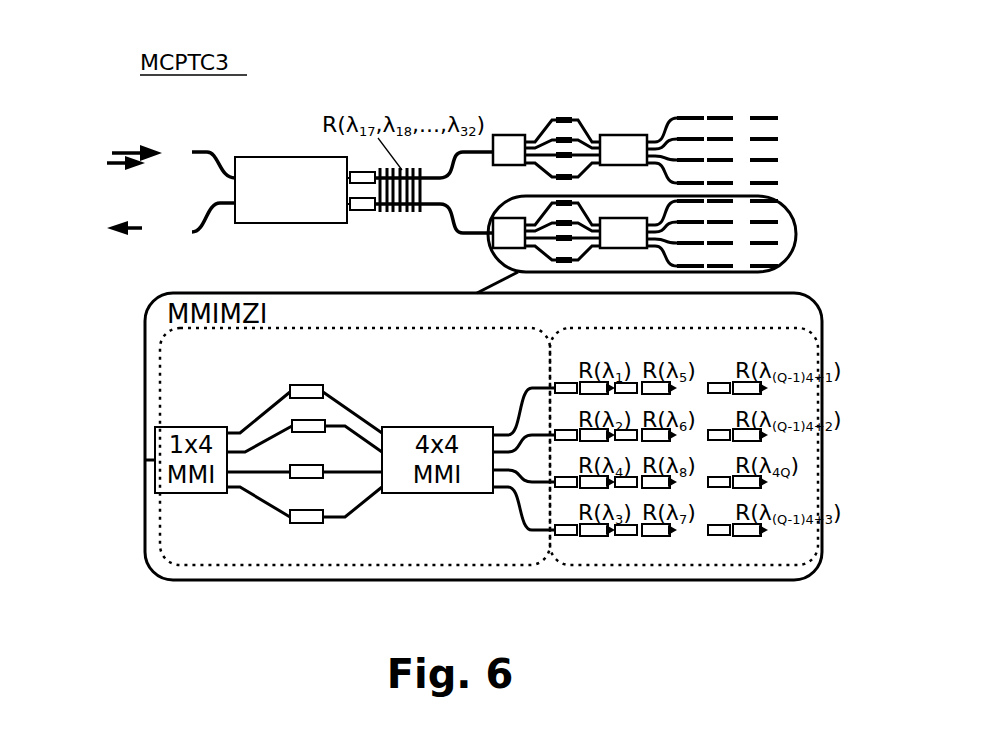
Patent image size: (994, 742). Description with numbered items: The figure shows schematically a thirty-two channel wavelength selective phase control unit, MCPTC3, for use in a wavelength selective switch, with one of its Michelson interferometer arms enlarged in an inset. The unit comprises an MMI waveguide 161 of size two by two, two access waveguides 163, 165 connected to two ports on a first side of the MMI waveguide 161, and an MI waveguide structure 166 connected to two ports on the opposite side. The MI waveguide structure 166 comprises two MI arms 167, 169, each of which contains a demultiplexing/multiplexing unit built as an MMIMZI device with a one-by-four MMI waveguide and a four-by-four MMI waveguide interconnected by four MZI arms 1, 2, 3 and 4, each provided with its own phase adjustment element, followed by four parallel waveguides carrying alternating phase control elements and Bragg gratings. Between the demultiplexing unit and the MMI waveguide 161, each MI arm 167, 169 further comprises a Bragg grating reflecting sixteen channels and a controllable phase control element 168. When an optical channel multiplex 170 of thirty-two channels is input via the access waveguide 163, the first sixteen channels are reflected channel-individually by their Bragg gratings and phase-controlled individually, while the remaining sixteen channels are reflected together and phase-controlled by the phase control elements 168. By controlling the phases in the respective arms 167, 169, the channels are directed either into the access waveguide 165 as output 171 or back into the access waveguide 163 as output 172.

The MMI waveguide 161 is at (283, 157).
The access waveguide 163 is at (220, 173).
The access waveguide 165 is at (217, 208).
The MI waveguide structure 166 is at (634, 86).
The MI arm 167 is at (808, 108).
The controllable phase control element 168 is at (368, 171).
The MI arm 169 is at (808, 196).
The optical channel multiplex 170 is at (140, 147).
The output 171 is at (125, 235).
The output 172 is at (118, 170).
The MZI arm 1 is at (304, 404).
The MZI arm 2 is at (304, 430).
The MZI arm 3 is at (304, 462).
The MZI arm 4 is at (304, 505).